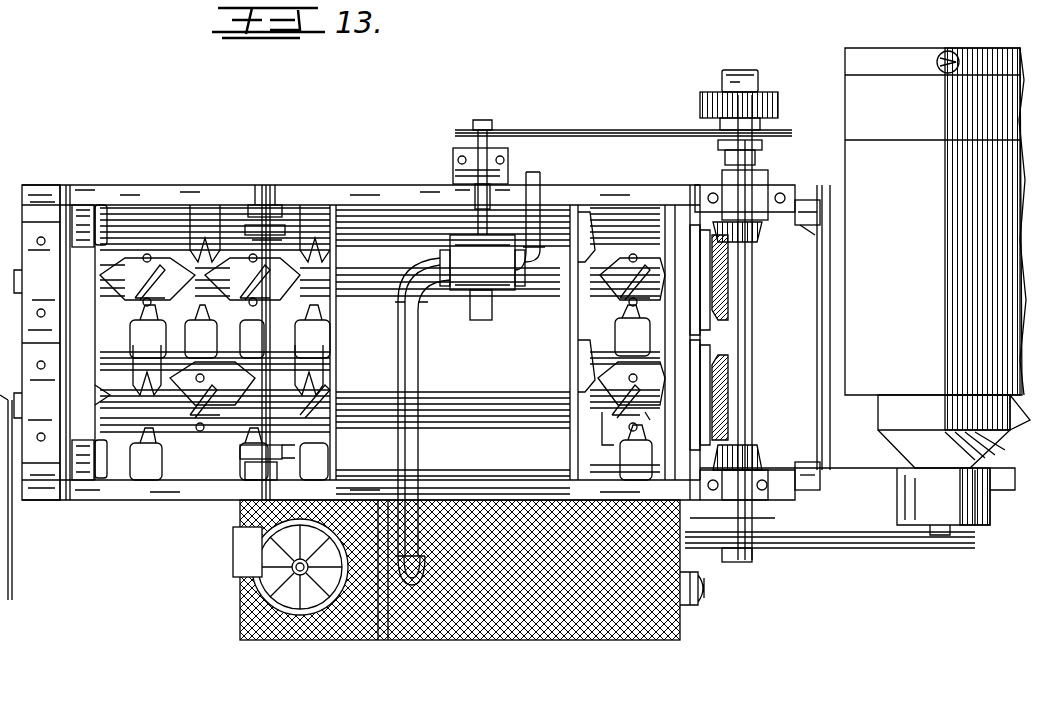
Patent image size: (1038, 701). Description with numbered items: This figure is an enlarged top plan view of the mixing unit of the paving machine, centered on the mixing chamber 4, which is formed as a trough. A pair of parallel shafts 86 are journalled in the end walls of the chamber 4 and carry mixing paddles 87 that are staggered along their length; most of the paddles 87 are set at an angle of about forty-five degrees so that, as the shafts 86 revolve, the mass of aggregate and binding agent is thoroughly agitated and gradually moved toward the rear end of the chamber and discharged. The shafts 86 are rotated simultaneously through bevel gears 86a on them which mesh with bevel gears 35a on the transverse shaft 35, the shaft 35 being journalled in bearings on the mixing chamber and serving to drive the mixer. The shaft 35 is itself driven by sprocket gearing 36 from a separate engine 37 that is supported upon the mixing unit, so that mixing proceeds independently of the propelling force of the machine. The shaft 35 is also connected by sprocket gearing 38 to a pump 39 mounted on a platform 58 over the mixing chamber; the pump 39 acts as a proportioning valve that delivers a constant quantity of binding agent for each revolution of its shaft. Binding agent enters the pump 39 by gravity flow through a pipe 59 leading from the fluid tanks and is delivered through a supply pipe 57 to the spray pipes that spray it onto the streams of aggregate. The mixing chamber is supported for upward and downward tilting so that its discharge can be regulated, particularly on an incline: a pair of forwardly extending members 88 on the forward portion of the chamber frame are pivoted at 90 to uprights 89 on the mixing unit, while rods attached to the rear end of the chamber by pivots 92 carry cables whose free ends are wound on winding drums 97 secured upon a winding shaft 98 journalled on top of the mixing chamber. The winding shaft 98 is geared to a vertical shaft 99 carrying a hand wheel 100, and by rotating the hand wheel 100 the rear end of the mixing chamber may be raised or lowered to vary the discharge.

The mixing chamber 4 is at (143, 205).
The transverse shaft 35 is at (752, 335).
The bevel gear 35a is at (750, 240).
The sprocket gearing 36 is at (842, 548).
The engine 37 is at (880, 178).
The sprocket gearing 38 is at (590, 130).
The pump 39 is at (490, 300).
The supply pipe 57 is at (540, 200).
The platform 58 is at (429, 421).
The pipe 59 is at (696, 603).
The shaft 86 is at (728, 300).
The bevel gear 86a is at (730, 275).
The mixing paddle 87 is at (335, 370).
The forwardly extending member 88 is at (782, 185).
The upright 89 is at (800, 230).
The pivot 90 is at (808, 200).
The pivot 92 is at (104, 205).
The winding drum 97 is at (270, 195).
The winding shaft 98 is at (340, 268).
The vertical shaft 99 is at (255, 570).
The hand wheel 100 is at (260, 592).